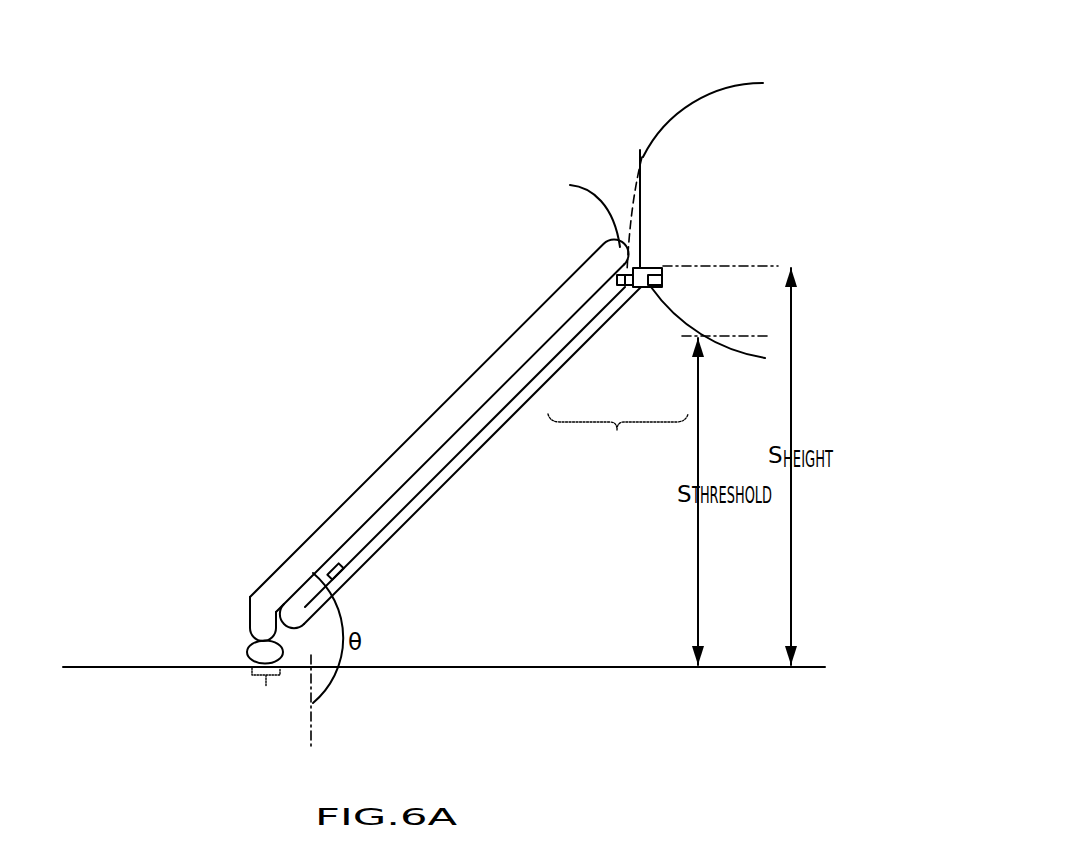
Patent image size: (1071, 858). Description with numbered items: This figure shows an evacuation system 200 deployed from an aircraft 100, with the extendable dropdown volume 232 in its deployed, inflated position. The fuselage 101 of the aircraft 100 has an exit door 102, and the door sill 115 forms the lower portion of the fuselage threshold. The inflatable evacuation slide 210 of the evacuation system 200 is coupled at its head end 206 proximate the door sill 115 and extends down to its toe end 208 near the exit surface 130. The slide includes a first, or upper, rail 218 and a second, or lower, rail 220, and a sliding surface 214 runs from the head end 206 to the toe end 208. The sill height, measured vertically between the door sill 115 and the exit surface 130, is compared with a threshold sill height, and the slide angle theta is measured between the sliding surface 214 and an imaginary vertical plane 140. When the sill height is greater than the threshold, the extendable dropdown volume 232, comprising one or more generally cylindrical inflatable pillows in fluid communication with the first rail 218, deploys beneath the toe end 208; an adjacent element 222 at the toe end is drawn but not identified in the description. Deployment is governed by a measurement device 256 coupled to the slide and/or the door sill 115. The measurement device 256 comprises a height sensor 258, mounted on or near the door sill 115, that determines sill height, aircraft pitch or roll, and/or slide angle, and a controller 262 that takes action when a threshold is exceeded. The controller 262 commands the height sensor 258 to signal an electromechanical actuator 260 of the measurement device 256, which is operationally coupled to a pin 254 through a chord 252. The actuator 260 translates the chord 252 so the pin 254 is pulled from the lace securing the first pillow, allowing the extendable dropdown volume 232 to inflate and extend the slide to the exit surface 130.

The aircraft 100 is at (703, 98).
The fuselage 101 is at (668, 118).
The exit door 102 is at (643, 193).
The door sill 115 is at (640, 264).
The exit surface 130 is at (83, 665).
The imaginary vertical plane 140 is at (318, 725).
The evacuation system 200 is at (418, 218).
The head end 206 is at (587, 214).
The toe end 208 is at (250, 606).
The inflatable evacuation slide 210 is at (405, 368).
The sliding surface 214 is at (350, 533).
The first rail 218 is at (490, 360).
The second rail 220 is at (443, 483).
The contact region with ground 222 is at (266, 690).
The extendable dropdown volume 232 is at (252, 656).
The chord 252 is at (620, 286).
The pin 254 is at (347, 577).
The measurement device 256 is at (618, 441).
The height sensor 258 is at (644, 288).
The electromechanical actuator 260 is at (627, 286).
The controller 262 is at (664, 282).